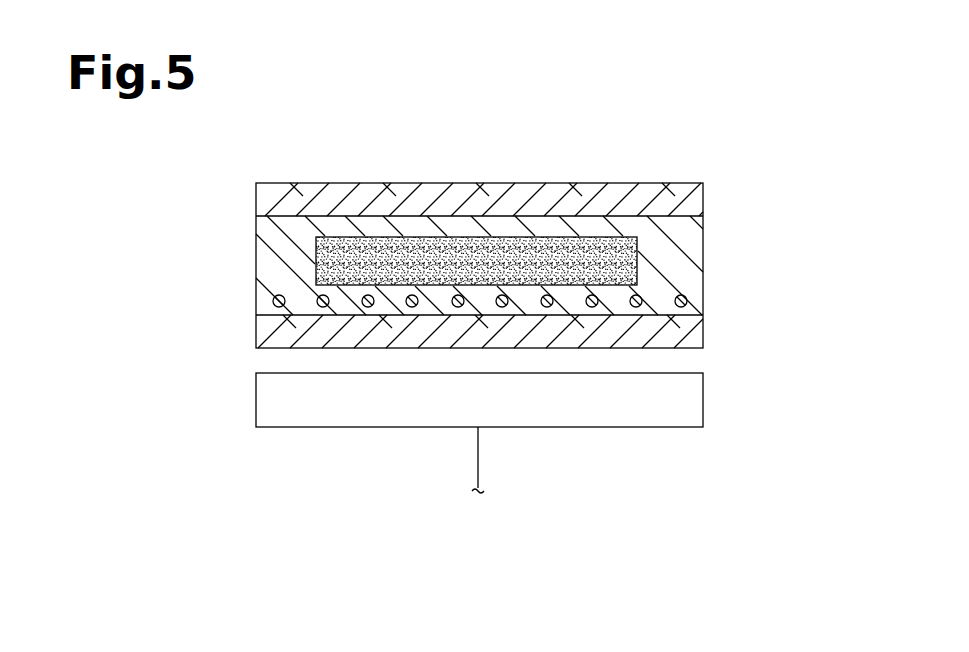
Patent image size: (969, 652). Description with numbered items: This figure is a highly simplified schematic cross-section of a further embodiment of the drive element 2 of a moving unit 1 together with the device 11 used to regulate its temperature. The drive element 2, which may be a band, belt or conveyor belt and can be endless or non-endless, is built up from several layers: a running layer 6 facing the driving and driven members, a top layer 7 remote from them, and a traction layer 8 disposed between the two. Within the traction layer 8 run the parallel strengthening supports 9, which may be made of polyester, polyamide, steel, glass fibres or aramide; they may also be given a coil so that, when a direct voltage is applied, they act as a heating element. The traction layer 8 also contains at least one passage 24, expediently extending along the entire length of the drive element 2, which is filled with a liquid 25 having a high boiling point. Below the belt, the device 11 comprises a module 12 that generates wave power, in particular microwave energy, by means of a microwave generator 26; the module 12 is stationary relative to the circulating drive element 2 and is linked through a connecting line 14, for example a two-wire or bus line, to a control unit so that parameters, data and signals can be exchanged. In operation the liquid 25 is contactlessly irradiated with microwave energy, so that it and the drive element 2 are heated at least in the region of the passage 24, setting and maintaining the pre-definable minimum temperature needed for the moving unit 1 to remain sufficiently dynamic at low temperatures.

The moving unit 1 is at (720, 143).
The drive element 2 is at (662, 170).
The running layer 6 is at (715, 330).
The top layer 7 is at (722, 193).
The traction layer 8 is at (715, 285).
The strengthening supports 9 is at (323, 308).
The device 11 is at (268, 447).
The module 12 is at (633, 412).
The connecting line 14 is at (478, 463).
The passage 24 is at (320, 228).
The liquid 25 is at (437, 258).
The microwave generator 26 is at (680, 397).